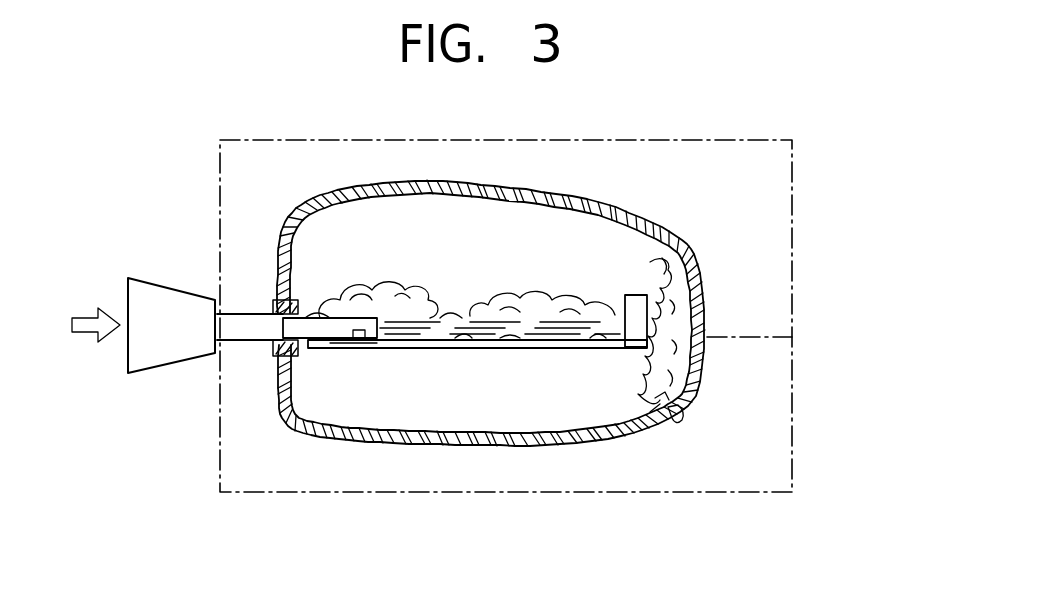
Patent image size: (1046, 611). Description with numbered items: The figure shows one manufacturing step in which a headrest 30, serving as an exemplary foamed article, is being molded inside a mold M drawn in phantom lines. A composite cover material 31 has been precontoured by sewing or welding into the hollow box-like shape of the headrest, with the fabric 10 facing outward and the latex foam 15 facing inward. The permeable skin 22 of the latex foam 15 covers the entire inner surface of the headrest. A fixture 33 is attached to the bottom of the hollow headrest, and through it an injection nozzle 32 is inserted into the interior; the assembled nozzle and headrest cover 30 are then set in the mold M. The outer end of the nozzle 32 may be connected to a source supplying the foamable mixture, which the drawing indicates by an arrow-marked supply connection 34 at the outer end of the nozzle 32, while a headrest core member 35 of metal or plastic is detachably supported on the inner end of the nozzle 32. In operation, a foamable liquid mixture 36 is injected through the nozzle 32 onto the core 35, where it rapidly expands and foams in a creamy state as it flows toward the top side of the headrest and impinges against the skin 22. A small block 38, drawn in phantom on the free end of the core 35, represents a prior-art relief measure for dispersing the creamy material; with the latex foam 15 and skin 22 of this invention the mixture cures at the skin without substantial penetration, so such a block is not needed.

The fabric 10 is at (392, 183).
The latex foam 15 is at (380, 197).
The permeable skin 22 is at (445, 195).
The headrest 30 is at (568, 266).
The composite cover material 31 is at (657, 221).
The injection nozzle 32 is at (262, 330).
The fixture 33 is at (276, 300).
The plug 34 is at (128, 300).
The headrest core member 35 is at (393, 348).
The foamable liquid mixture 36 is at (520, 296).
The small block 38 is at (628, 322).
The mold M is at (650, 140).